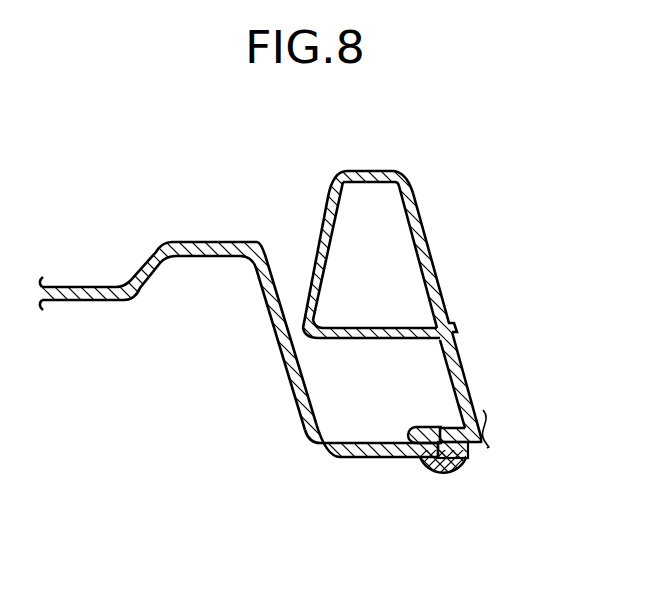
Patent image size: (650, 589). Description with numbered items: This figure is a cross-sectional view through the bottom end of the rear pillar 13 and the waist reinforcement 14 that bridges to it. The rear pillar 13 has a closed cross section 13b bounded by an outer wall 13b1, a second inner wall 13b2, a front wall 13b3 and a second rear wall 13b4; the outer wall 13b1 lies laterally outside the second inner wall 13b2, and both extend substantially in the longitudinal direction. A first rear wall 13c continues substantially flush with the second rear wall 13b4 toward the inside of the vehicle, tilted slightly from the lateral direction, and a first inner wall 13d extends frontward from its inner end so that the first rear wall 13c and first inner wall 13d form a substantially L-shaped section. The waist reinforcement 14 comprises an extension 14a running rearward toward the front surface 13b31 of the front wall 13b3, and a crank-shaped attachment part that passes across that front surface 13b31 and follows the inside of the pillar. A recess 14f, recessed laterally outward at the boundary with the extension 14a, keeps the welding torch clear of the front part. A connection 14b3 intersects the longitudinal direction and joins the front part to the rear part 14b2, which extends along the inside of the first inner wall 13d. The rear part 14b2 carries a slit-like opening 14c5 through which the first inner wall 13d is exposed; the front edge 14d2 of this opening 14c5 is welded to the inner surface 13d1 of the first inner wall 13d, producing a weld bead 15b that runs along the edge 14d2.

The rear pillar 13 is at (325, 292).
The closed cross section 13b is at (325, 298).
The outer wall 13b1 is at (366, 171).
The second inner wall 13b2 is at (400, 327).
The front wall 13b3 is at (326, 204).
The front surface 13b31 is at (318, 244).
The second rear wall 13b4 is at (423, 228).
The first rear wall 13c is at (462, 371).
The first inner wall 13d is at (423, 427).
The inner surface 13d1 is at (478, 444).
The waist reinforcement 14 is at (325, 368).
The extension 14a is at (69, 300).
The recess 14f is at (190, 258).
The connection 14b3 is at (296, 382).
The rear part 14b2 is at (372, 454).
The front edge 14d2 is at (325, 368).
The opening 14c5 is at (60, 227).
The weld bead 15b is at (434, 464).